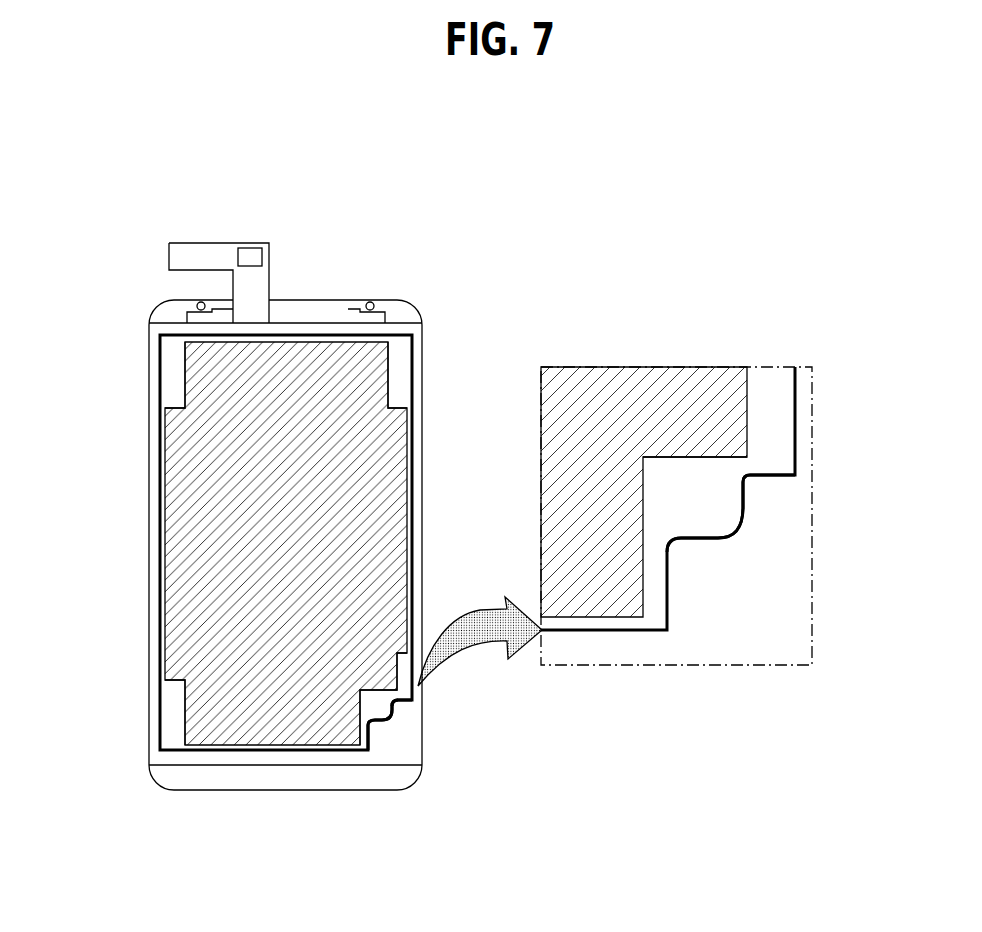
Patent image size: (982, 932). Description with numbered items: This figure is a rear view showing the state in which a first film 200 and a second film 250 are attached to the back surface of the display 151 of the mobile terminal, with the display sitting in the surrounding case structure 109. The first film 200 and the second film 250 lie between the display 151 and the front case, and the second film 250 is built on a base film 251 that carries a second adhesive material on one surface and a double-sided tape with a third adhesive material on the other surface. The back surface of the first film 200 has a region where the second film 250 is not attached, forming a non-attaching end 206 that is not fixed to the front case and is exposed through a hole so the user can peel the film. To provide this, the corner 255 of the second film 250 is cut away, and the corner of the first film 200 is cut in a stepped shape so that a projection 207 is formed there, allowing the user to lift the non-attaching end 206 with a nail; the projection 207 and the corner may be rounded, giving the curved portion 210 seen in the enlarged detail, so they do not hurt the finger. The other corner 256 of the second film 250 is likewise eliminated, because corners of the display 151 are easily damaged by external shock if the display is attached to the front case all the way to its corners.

The frame 109 is at (158, 306).
The display 151 is at (156, 355).
The first film 200 is at (158, 393).
The second film 250 is at (163, 546).
The other corner 256 is at (168, 350).
The non-attaching end 206 is at (390, 725).
The curved portion 210 is at (399, 704).
The corner 255 is at (374, 691).
The base film 251 is at (702, 457).
The projection 207 is at (700, 520).